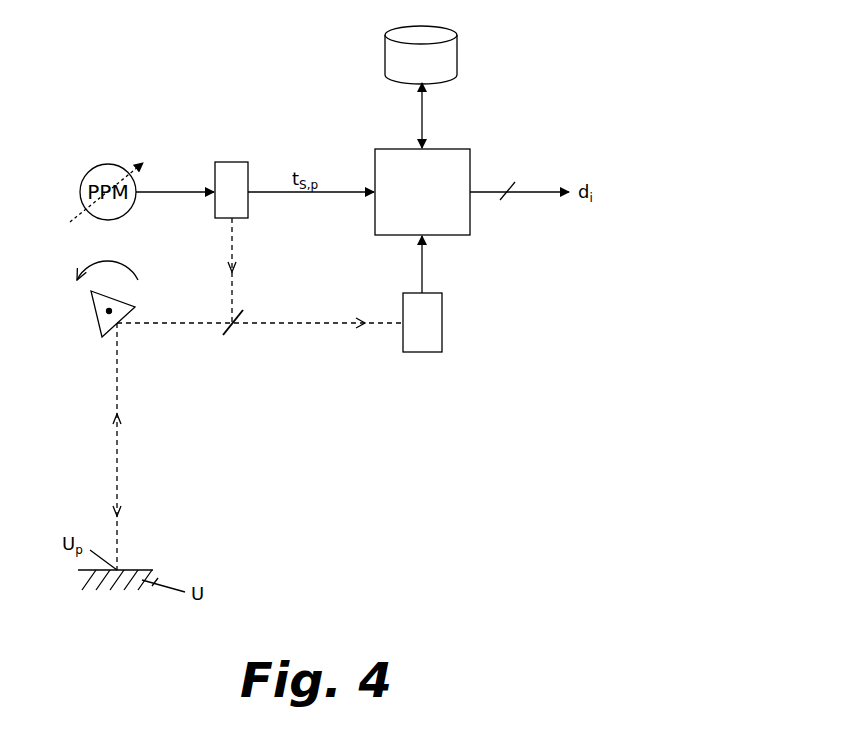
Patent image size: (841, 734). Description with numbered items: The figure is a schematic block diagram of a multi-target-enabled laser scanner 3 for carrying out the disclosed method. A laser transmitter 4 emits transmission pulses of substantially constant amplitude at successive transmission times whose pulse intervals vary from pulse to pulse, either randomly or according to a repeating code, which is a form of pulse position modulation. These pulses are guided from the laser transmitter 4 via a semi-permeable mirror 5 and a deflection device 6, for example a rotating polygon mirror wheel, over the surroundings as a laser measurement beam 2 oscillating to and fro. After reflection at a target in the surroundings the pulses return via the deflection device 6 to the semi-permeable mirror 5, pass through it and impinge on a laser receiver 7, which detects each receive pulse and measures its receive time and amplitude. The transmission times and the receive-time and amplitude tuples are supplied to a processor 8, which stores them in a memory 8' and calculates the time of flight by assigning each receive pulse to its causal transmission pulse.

The laser measurement beam 2 is at (232, 233).
The multi-target-enabled laser scanner 3 is at (438, 485).
The laser transmitter 4 is at (223, 162).
The semi-permeable mirror 5 is at (236, 328).
The deflection device 6 is at (80, 327).
The laser receiver 7 is at (442, 342).
The processor 8 is at (407, 172).
The memory 8' is at (445, 87).